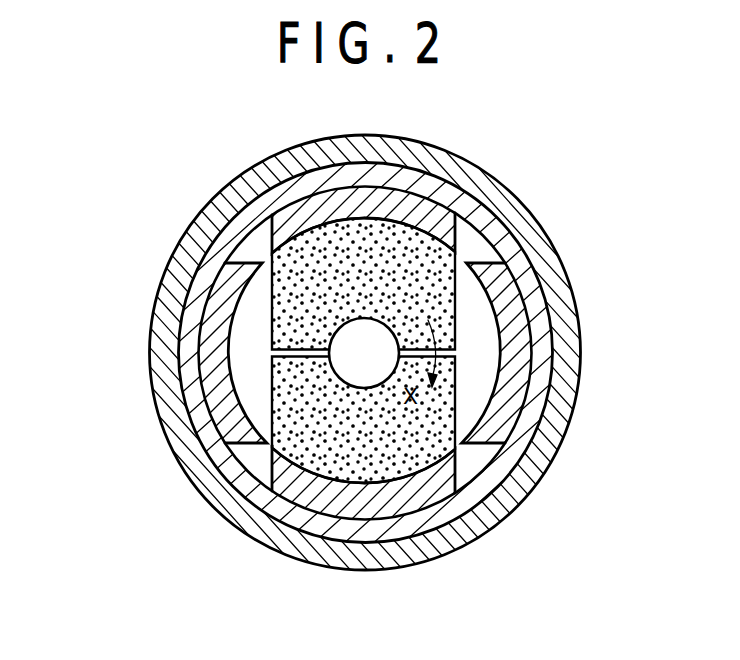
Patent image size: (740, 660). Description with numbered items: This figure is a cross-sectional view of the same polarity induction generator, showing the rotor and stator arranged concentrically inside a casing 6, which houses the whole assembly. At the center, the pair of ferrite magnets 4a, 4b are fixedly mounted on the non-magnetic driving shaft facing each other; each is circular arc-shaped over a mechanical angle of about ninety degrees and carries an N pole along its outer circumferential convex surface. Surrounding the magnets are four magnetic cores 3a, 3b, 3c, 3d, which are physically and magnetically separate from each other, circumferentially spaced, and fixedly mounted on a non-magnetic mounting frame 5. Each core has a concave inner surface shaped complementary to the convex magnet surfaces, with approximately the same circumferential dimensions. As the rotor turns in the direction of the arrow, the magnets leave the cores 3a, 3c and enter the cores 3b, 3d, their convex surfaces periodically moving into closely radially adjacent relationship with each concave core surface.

The magnetic core 3a is at (437, 212).
The magnetic core 3b is at (510, 383).
The magnetic core 3c is at (422, 498).
The magnetic core 3d is at (205, 331).
The ferrite magnet 4a is at (408, 243).
The ferrite magnet 4b is at (313, 458).
The non-magnetic mounting frame 5 is at (505, 238).
The casing 6 is at (252, 182).